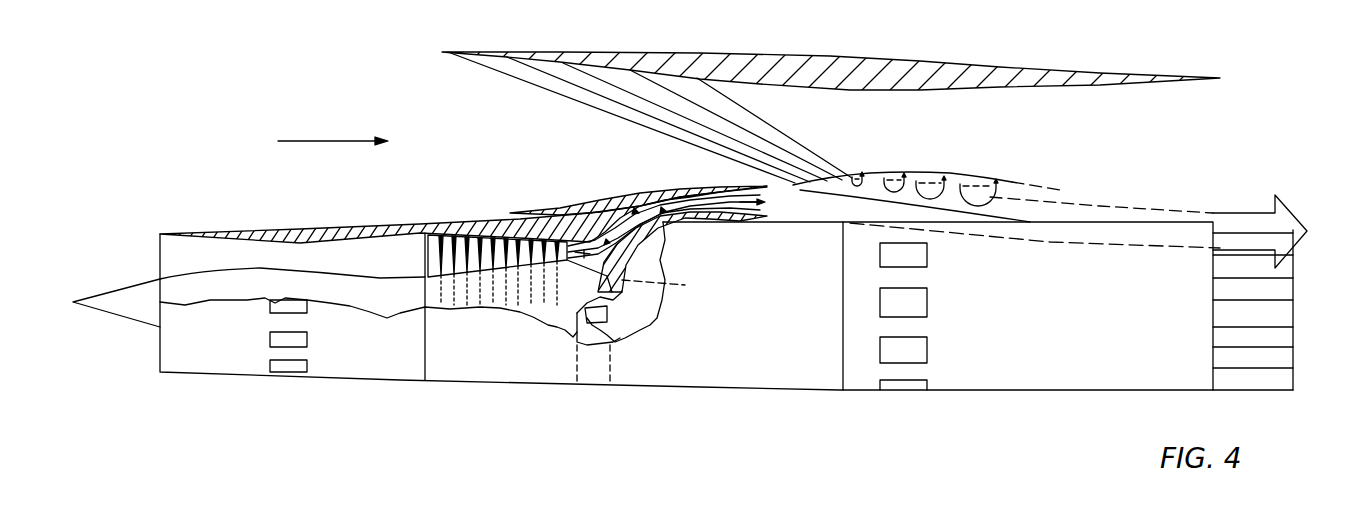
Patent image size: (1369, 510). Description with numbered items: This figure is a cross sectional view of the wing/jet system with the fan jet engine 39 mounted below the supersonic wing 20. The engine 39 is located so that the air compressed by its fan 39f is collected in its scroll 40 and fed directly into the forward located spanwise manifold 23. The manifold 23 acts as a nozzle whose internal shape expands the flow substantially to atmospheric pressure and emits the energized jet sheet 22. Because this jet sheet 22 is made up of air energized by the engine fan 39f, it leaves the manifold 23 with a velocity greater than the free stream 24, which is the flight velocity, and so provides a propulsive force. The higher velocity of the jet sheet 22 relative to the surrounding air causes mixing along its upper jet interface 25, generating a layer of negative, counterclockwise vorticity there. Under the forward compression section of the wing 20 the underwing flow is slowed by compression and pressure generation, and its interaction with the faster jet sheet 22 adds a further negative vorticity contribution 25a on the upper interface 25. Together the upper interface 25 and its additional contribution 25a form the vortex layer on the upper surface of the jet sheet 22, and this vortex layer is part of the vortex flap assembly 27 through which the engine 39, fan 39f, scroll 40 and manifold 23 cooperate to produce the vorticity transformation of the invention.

The supersonic wing 20 is at (1150, 71).
The jet sheet 22 is at (770, 204).
The manifold/nozzle 23 is at (595, 195).
The free stream 24 is at (295, 141).
The upper jet interface 25 is at (1003, 197).
The additional negative vorticity contribution 25a is at (1007, 173).
The vortex flap assembly 27 is at (1300, 240).
The fan jet engine 39 is at (230, 375).
The engine fan 39f is at (428, 247).
The collector scroll 40 is at (610, 357).